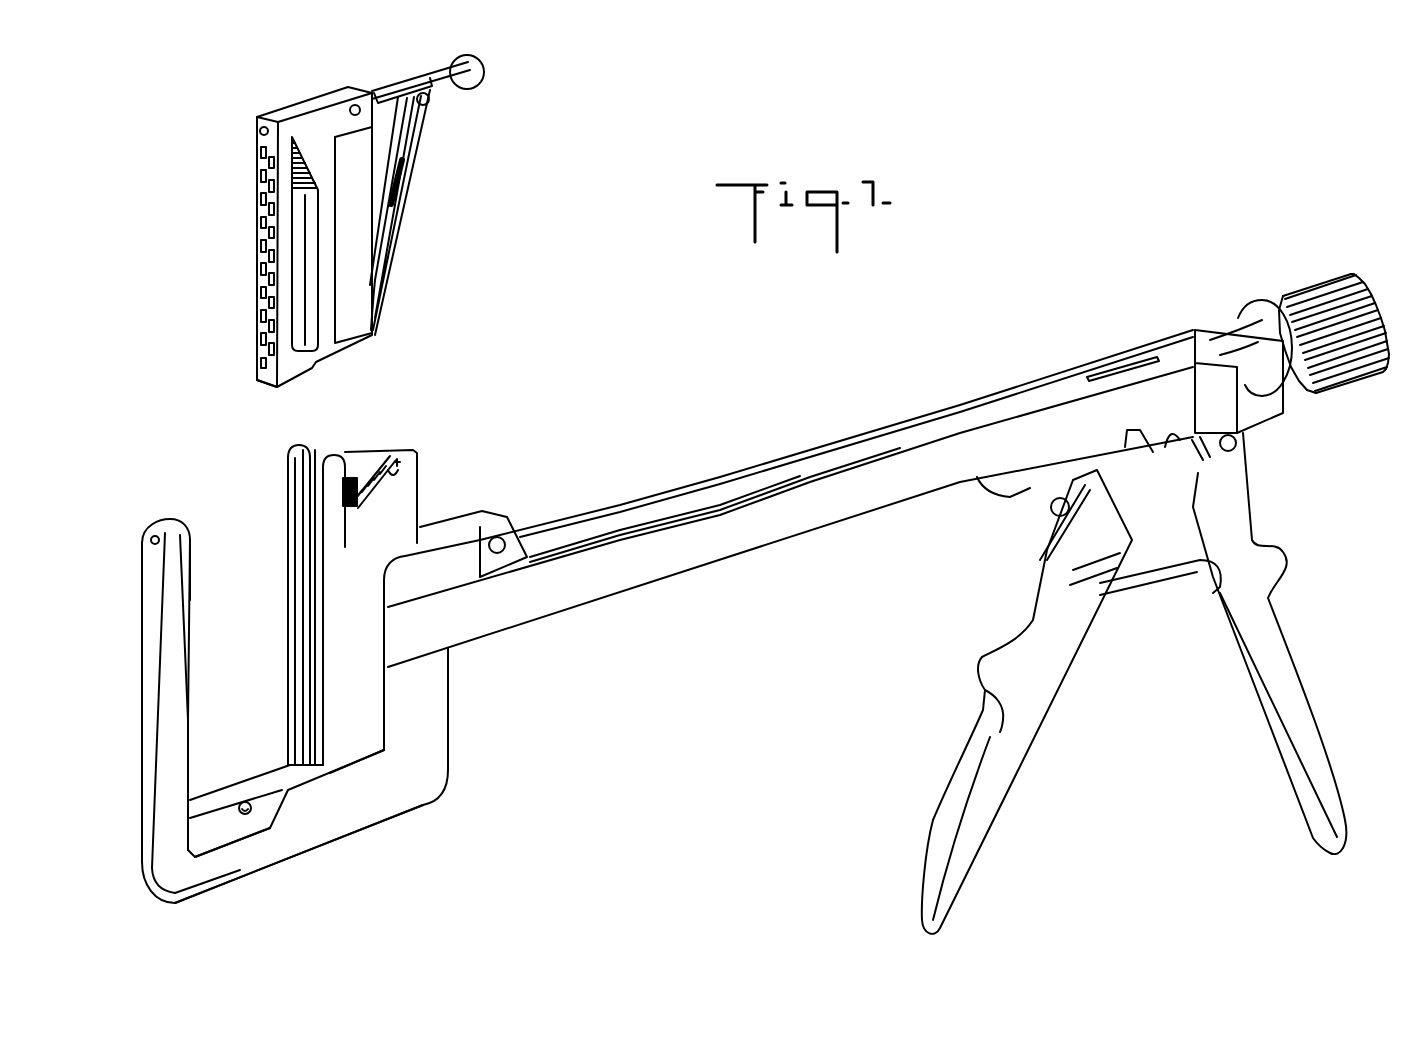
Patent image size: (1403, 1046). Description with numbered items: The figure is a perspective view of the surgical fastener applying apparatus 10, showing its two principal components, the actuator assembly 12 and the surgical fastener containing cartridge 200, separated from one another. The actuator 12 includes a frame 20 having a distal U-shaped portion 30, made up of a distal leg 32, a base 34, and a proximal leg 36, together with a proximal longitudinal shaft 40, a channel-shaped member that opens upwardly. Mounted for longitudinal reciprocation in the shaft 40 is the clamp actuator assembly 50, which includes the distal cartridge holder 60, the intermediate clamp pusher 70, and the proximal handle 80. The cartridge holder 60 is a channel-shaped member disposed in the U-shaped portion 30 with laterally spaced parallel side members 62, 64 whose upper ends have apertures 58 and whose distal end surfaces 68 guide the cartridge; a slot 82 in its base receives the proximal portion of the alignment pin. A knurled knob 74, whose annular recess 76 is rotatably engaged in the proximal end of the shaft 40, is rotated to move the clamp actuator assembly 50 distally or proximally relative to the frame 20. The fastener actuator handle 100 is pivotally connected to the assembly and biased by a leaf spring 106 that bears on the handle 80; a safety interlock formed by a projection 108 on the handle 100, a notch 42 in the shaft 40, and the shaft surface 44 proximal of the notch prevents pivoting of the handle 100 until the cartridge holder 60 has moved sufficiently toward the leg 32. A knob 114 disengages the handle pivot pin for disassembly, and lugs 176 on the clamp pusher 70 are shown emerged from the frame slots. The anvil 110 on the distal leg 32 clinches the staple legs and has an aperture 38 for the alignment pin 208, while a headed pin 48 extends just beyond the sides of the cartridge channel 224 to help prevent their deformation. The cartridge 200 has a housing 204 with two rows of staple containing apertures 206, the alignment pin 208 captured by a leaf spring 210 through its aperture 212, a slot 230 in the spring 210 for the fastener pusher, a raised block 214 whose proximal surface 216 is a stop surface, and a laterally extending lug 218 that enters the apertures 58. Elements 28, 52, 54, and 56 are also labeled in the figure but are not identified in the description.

The surgical fastener applying apparatus 10 is at (673, 414).
The actuator assembly 12 is at (1302, 258).
The frame 20 is at (705, 562).
The slot 28 is at (222, 806).
The distal U-shaped portion 30 is at (375, 812).
The distal leg 32 is at (142, 667).
The base 34 is at (290, 850).
The proximal leg 36 is at (440, 690).
The aperture 38 is at (150, 540).
The shaft 40 is at (777, 533).
The notch 42 is at (1133, 440).
The shaft surface 44 is at (1170, 443).
The headed pin 48 is at (249, 800).
The clamp actuator assembly 50 is at (680, 502).
The pusher 52 is at (313, 445).
The knife 54 is at (308, 482).
The pusher bar 56 is at (290, 450).
The apertures 58 is at (363, 457).
The cartridge holder 60 is at (405, 506).
The side member 62 is at (333, 642).
The side member 64 is at (300, 546).
The distal end surfaces 68 is at (323, 598).
The clamp pusher 70 is at (780, 477).
The knurled knob 74 is at (1385, 268).
The annular recess 76 is at (1253, 317).
The proximal handle 80 is at (1317, 740).
The slot 82 is at (402, 456).
The fastener actuator handle 100 is at (1000, 773).
The leaf spring 106 is at (1152, 577).
The projection 108 is at (1205, 460).
The anvil member 110 is at (190, 553).
The knob 114 is at (1050, 510).
The lugs 176 is at (507, 537).
The surgical fastener containing cartridge 200 is at (203, 229).
The cartridge housing 204 is at (305, 105).
The staple containing apertures 206 is at (266, 306).
The alignment pin 208 is at (389, 82).
The leaf spring 210 is at (412, 177).
The aperture 212 is at (428, 103).
The raised block 214 is at (300, 328).
The stop surface 216 is at (313, 308).
The lug 218 is at (355, 104).
The channel 224 is at (262, 402).
The slot 230 is at (383, 237).